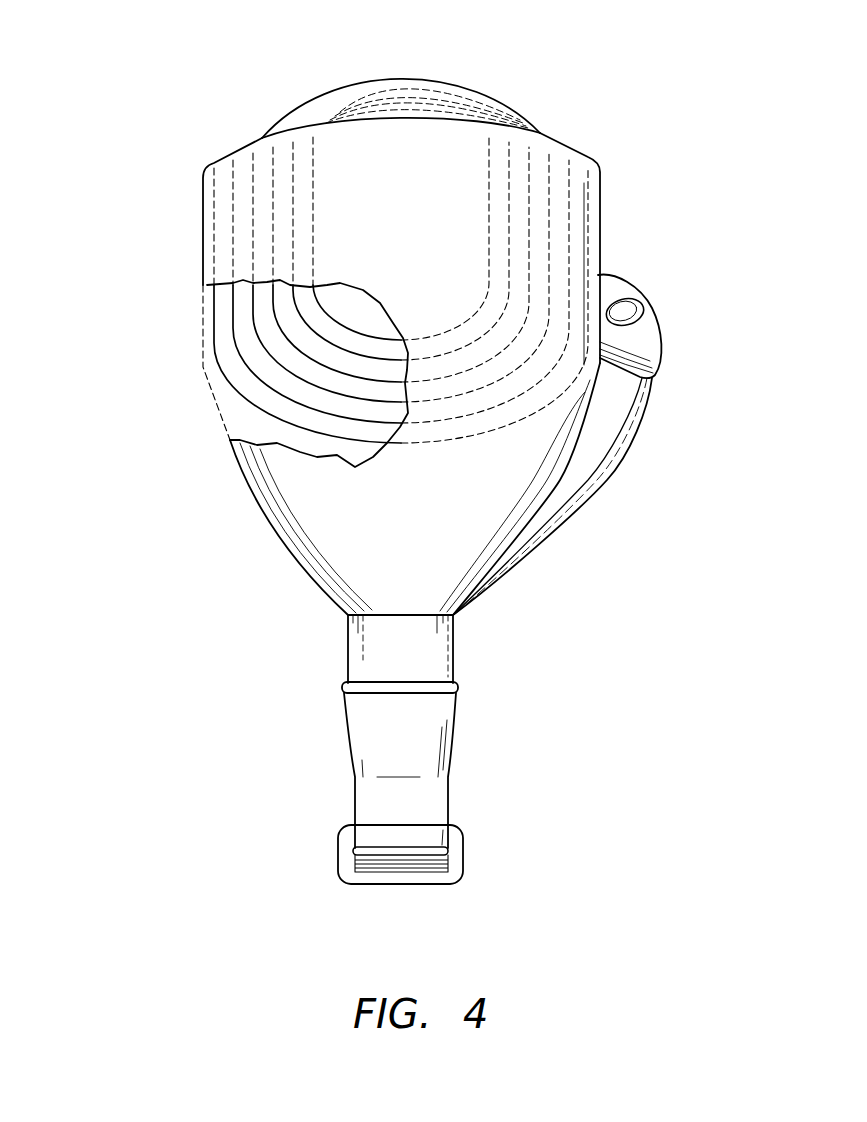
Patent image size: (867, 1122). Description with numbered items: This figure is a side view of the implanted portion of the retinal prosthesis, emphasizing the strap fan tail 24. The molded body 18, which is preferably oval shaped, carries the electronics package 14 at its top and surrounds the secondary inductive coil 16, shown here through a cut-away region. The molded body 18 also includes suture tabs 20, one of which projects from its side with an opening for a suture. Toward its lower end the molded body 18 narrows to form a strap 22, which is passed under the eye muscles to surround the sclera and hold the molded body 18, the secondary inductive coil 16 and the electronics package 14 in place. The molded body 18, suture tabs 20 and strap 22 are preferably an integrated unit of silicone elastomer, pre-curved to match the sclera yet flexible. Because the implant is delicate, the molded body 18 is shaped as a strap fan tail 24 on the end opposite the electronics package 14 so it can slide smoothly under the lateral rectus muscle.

The electronics package 14 is at (400, 80).
The secondary inductive coil 16 is at (230, 373).
The molded body 18 is at (600, 187).
The suture tabs 20 is at (657, 312).
The strap 22 is at (453, 657).
The strap fan tail 24 is at (143, 445).